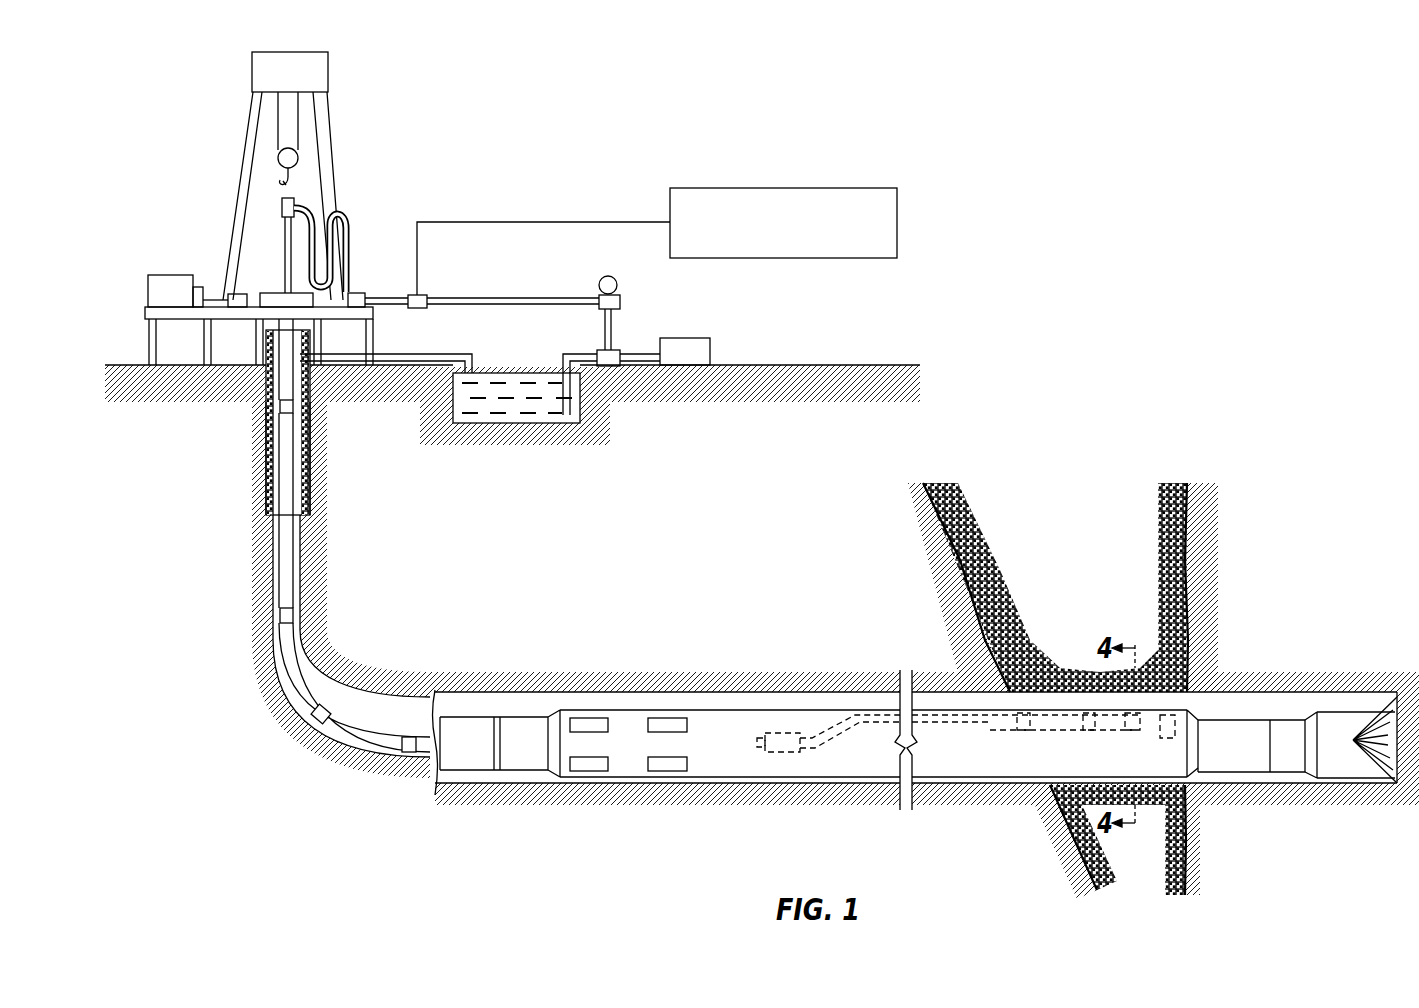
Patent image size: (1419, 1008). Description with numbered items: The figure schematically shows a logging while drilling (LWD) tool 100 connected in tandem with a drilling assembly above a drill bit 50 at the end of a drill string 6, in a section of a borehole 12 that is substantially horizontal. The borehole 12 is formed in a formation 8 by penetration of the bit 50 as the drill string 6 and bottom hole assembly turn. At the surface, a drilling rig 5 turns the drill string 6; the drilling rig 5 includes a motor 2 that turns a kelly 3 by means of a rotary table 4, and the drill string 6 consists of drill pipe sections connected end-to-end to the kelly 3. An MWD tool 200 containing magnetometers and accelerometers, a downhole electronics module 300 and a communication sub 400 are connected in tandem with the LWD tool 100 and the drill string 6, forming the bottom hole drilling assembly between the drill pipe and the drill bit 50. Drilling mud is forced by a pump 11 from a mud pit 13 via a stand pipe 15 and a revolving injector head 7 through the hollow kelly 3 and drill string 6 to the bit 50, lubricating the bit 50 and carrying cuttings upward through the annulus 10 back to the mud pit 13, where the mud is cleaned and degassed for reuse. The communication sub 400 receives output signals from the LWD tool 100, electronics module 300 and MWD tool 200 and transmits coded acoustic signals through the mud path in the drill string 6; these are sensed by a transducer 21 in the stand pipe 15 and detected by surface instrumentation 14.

The motor 2 is at (147, 291).
The kelly 3 is at (284, 250).
The rotary table 4 is at (314, 292).
The drilling rig 5 is at (244, 116).
The drill string 6 is at (280, 485).
The revolving injector head 7 is at (281, 203).
The formation 8 is at (1052, 512).
The annulus 10 is at (305, 574).
The pump 11 is at (712, 340).
The borehole 12 is at (320, 640).
The mud pit 13 is at (510, 400).
The surface instrumentation 14 is at (900, 210).
The stand pipe 15 is at (520, 300).
The transducer 21 is at (428, 297).
The drill bit 50 is at (1351, 763).
The logging while drilling (LWD) tool 100 is at (918, 697).
The MWD tool 200 is at (455, 755).
The downhole electronics module 300 is at (525, 757).
The communication sub 400 is at (1228, 728).